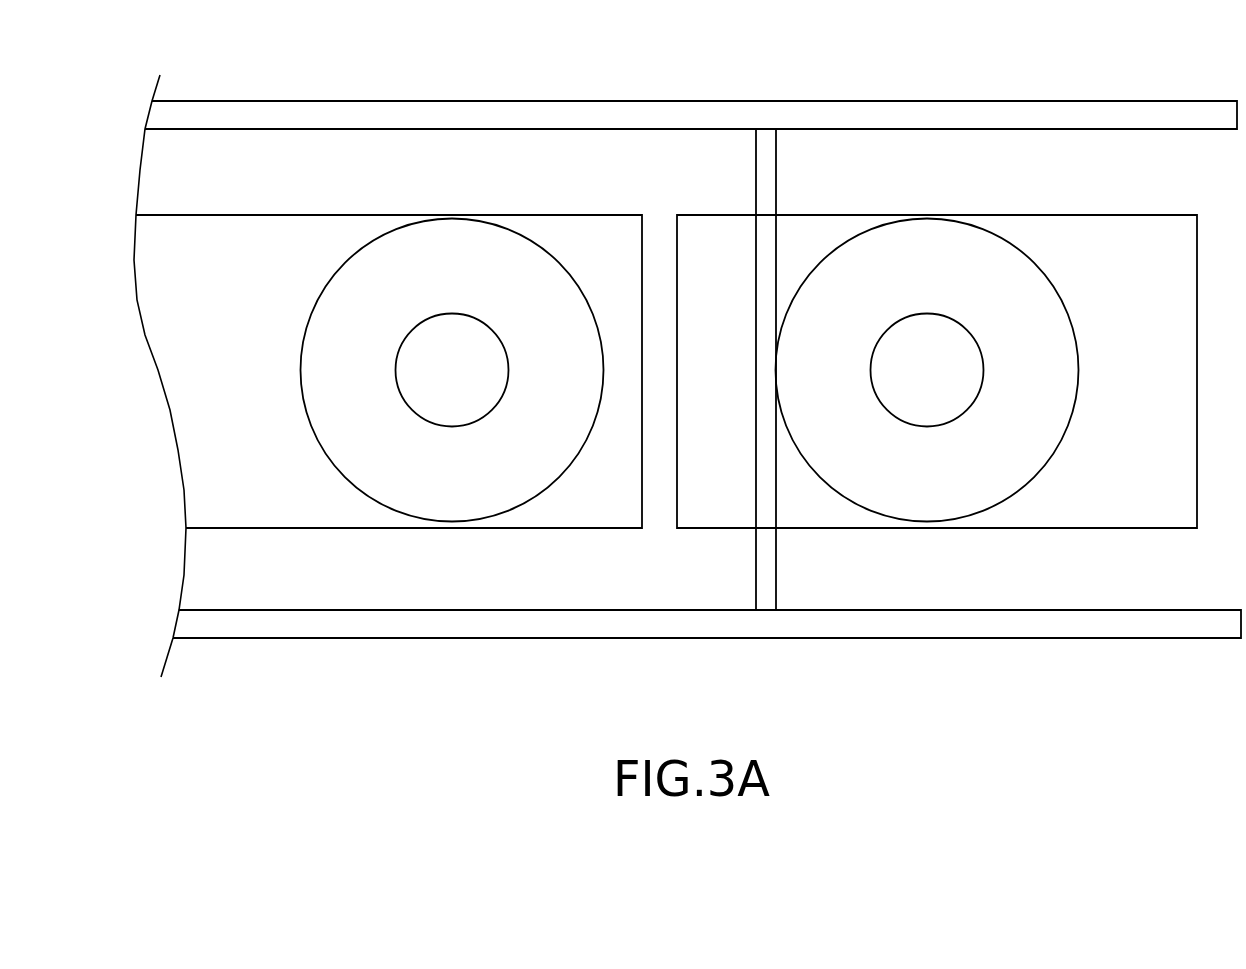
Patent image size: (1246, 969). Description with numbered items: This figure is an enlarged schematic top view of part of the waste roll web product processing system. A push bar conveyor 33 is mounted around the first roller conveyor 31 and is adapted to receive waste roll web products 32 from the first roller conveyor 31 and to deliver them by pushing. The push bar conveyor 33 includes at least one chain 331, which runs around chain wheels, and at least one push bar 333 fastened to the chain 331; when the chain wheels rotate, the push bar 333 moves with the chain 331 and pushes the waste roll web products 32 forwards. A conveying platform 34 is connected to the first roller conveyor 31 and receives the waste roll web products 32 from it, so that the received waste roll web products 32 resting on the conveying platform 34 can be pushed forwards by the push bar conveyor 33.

The first roller conveyor 31 is at (285, 222).
The waste roll web products 32 is at (928, 226).
The push bar conveyor 33 is at (691, 309).
The chain 331 is at (848, 110).
The push bar 333 is at (789, 330).
The conveying platform 34 is at (1120, 225).